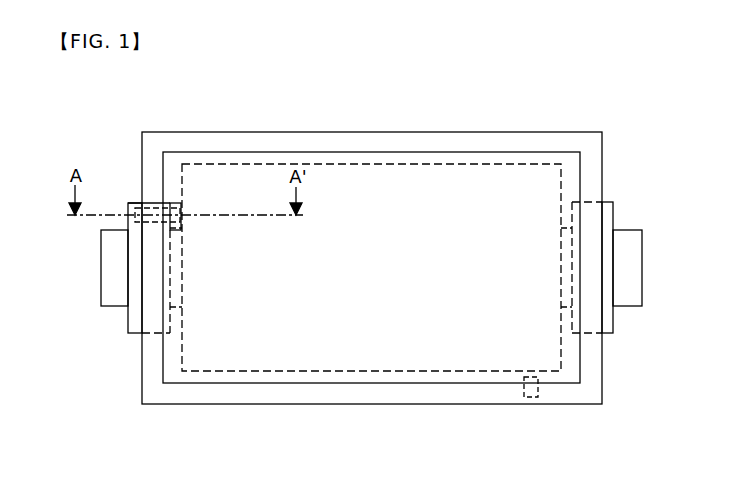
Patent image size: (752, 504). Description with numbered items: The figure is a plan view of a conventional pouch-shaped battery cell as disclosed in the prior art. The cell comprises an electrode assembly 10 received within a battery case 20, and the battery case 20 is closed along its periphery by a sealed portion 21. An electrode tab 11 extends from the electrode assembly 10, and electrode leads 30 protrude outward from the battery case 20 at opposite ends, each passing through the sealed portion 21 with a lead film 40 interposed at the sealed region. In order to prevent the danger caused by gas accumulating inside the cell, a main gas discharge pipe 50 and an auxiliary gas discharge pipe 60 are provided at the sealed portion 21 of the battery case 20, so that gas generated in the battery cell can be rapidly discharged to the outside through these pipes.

The electrode assembly 10 is at (347, 163).
The electrode tab 11 is at (173, 207).
The battery case 20 is at (277, 378).
The sealed portion 21 is at (365, 393).
The electrode lead 30 is at (115, 308).
The lead film 40 is at (135, 335).
The main gas discharge pipe 50 is at (153, 207).
The auxiliary gas discharge pipe 60 is at (535, 397).